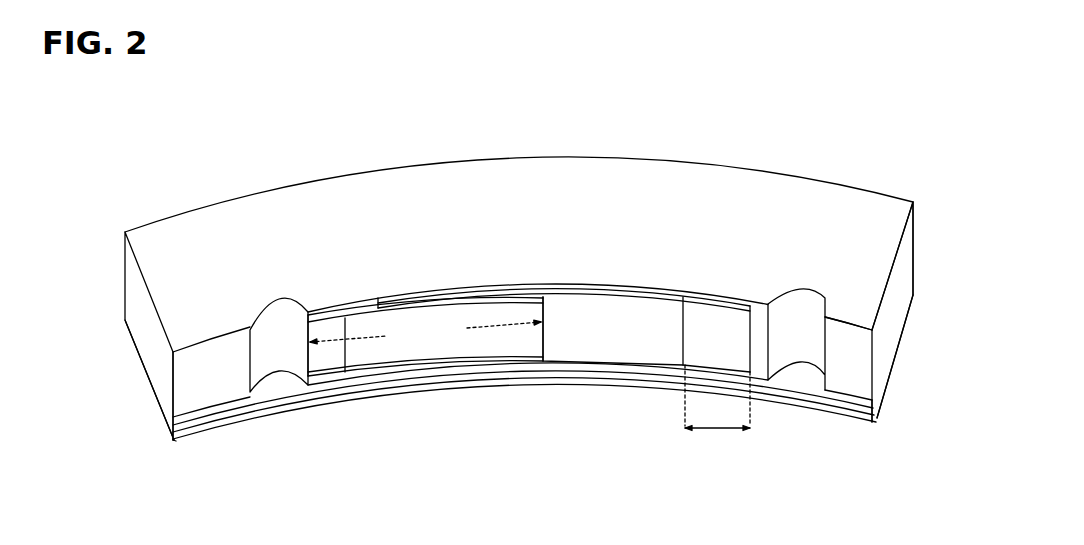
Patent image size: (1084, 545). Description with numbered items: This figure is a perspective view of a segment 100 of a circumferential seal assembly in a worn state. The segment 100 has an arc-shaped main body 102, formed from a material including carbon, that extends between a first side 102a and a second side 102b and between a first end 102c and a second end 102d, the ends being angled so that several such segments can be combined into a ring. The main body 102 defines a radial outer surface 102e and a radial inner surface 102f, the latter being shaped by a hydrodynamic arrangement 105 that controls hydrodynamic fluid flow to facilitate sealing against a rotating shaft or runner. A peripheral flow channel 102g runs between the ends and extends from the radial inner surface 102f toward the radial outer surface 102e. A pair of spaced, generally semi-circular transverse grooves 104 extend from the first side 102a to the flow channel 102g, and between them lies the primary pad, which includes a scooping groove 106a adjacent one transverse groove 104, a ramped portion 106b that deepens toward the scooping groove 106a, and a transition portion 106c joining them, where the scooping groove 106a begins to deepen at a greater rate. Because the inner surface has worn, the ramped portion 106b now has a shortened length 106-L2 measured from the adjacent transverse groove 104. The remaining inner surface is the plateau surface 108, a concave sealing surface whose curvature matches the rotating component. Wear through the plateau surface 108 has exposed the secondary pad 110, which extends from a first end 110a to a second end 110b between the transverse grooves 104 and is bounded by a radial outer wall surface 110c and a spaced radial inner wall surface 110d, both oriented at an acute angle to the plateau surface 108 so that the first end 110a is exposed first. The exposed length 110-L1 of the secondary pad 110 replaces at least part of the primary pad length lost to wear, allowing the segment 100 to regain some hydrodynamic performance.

The segment 100 is at (208, 148).
The main body 102 is at (153, 345).
The first side 102a is at (520, 177).
The second side 102b is at (878, 418).
The first end 102c is at (168, 391).
The second end 102d is at (893, 288).
The radial outer surface 102e is at (800, 185).
The radial inner surface 102f is at (613, 375).
The flow channel 102g is at (165, 404).
The transverse groove 104 is at (277, 350).
The hydrodynamic arrangement 105 is at (461, 411).
The scooping groove 106a is at (335, 352).
The ramped portion 106b is at (540, 354).
The transition portion 106c is at (355, 357).
The length of the ramped portion in a worn state 106-L2 is at (425, 332).
The plateau surface 108 is at (590, 325).
The secondary pad 110 is at (442, 287).
The first end of the secondary pad 110a is at (745, 300).
The second end of the secondary pad 110b is at (378, 297).
The radial outer wall surface 110c is at (715, 325).
The radial inner wall surface 110d is at (600, 287).
The exposed length of the secondary pad 110-L1 is at (722, 424).